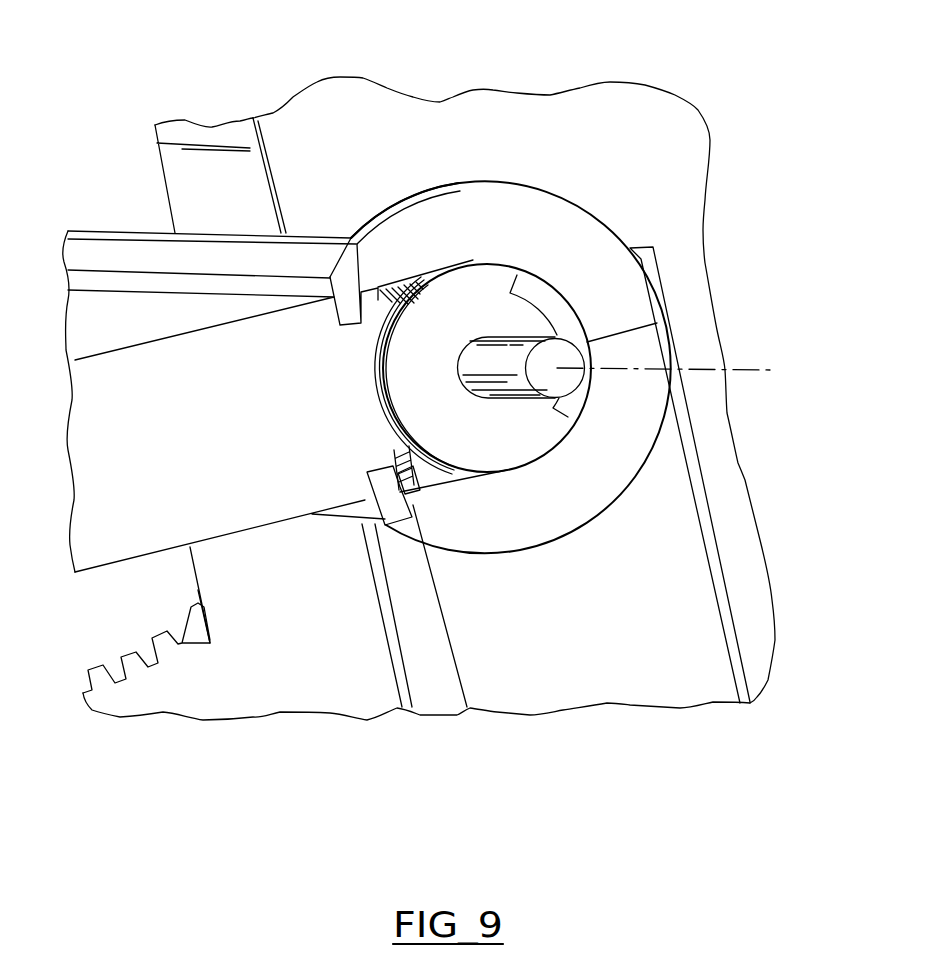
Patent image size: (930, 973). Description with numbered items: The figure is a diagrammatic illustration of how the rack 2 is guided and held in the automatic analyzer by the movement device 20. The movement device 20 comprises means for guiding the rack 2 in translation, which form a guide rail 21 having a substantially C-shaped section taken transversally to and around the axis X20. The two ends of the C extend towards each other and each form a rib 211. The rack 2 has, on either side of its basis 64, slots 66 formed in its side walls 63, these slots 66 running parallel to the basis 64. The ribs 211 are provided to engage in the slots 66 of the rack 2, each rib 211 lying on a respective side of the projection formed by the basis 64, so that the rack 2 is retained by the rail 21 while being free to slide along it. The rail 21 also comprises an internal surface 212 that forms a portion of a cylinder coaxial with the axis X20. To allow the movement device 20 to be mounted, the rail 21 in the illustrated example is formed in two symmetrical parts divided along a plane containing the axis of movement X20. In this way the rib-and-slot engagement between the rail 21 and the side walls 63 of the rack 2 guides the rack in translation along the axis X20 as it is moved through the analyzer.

The rack 2 is at (115, 572).
The movement device 20 is at (488, 172).
The guide rail 21 is at (570, 503).
The rib 211 is at (350, 305).
The internal surface 212 is at (505, 458).
The side wall 63 is at (228, 452).
The basis 64 is at (380, 293).
The slot 66 is at (338, 318).
The axis X20 is at (738, 372).